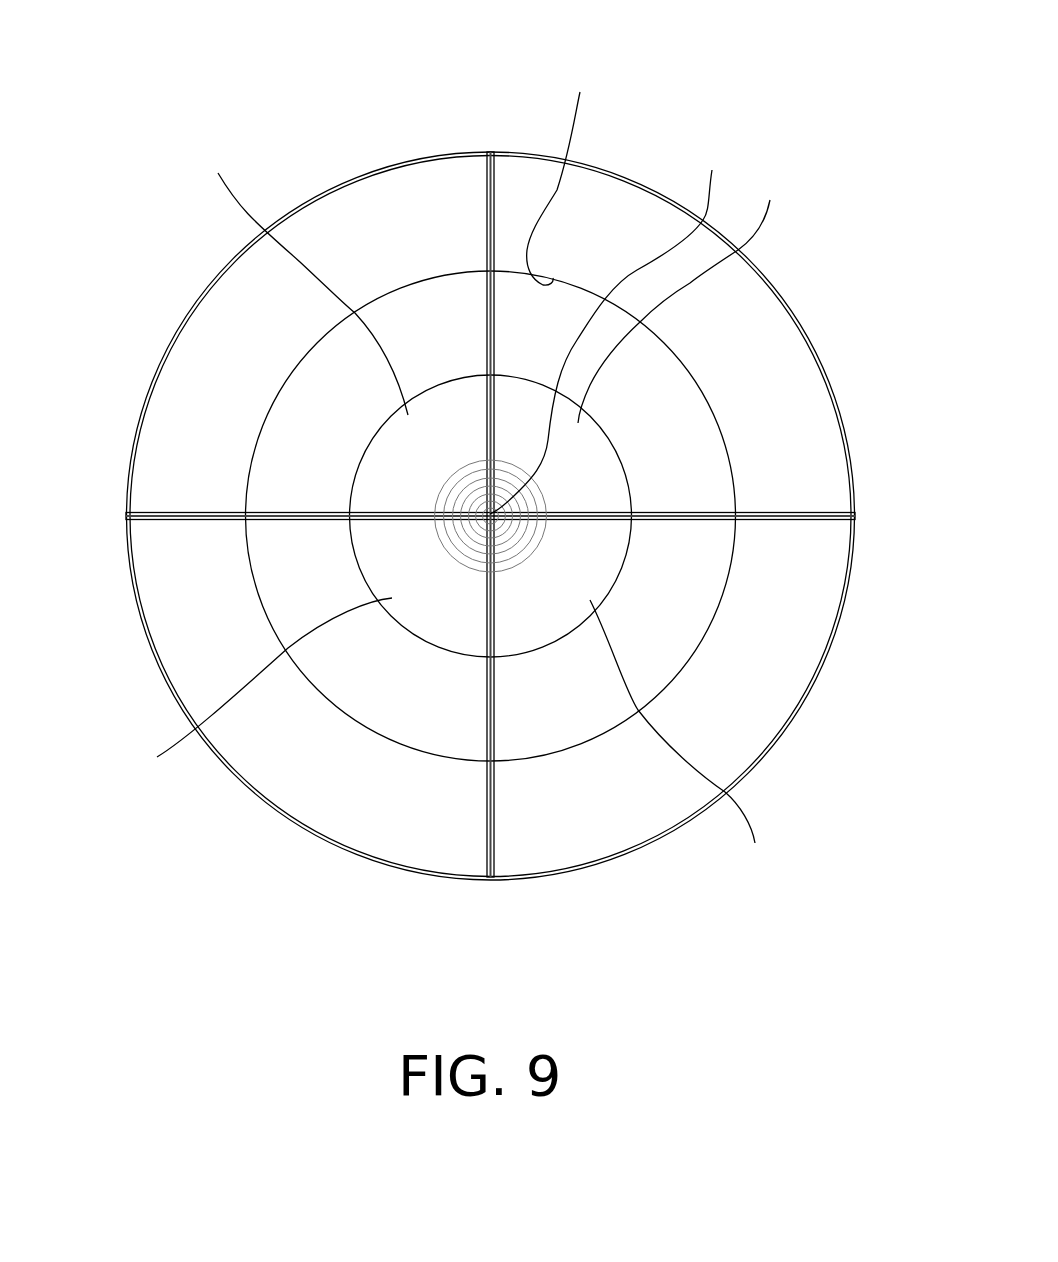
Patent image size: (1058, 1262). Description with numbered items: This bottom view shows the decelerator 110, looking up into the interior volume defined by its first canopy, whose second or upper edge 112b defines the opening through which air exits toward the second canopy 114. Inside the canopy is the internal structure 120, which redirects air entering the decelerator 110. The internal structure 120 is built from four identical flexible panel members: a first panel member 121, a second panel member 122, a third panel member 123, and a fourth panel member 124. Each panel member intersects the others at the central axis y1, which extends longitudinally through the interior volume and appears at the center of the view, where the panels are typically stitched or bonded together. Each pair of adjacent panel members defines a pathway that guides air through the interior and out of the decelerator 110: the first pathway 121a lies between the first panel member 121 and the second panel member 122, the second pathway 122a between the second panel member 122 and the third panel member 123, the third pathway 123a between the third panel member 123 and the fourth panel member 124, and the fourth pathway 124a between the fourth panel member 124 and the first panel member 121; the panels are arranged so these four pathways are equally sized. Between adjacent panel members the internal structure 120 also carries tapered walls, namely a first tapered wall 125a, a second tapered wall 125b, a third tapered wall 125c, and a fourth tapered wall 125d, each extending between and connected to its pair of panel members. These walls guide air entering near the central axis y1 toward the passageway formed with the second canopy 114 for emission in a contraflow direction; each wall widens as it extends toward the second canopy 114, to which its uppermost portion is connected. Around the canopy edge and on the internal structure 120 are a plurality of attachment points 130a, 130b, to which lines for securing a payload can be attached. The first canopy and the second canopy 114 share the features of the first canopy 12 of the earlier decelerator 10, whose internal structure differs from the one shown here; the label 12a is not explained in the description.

The decelerator 110 is at (150, 88).
The attachment points 130a is at (395, 165).
The attachment points 130b is at (495, 728).
The first panel member 121 is at (486, 182).
The second edge 112b is at (575, 173).
The central axis y1 is at (608, 327).
The first tapered wall 125a is at (689, 297).
The second tapered wall 125b is at (688, 737).
The third tapered wall 125c is at (246, 682).
The fourth tapered wall 125d is at (300, 282).
The fourth pathway 124a is at (217, 332).
The fourth panel member 124 is at (185, 512).
The first pathway 121a is at (780, 397).
The second panel member 122 is at (822, 512).
The second pathway 122a is at (747, 713).
The third panel member 123 is at (493, 833).
The third pathway 123a is at (235, 750).
The first canopy 12 is at (855, 492).
The housing wall 12a is at (695, 818).
The decelerator 10 is at (125, 505).
The internal structure 120 is at (263, 520).
The second canopy 114 is at (683, 620).